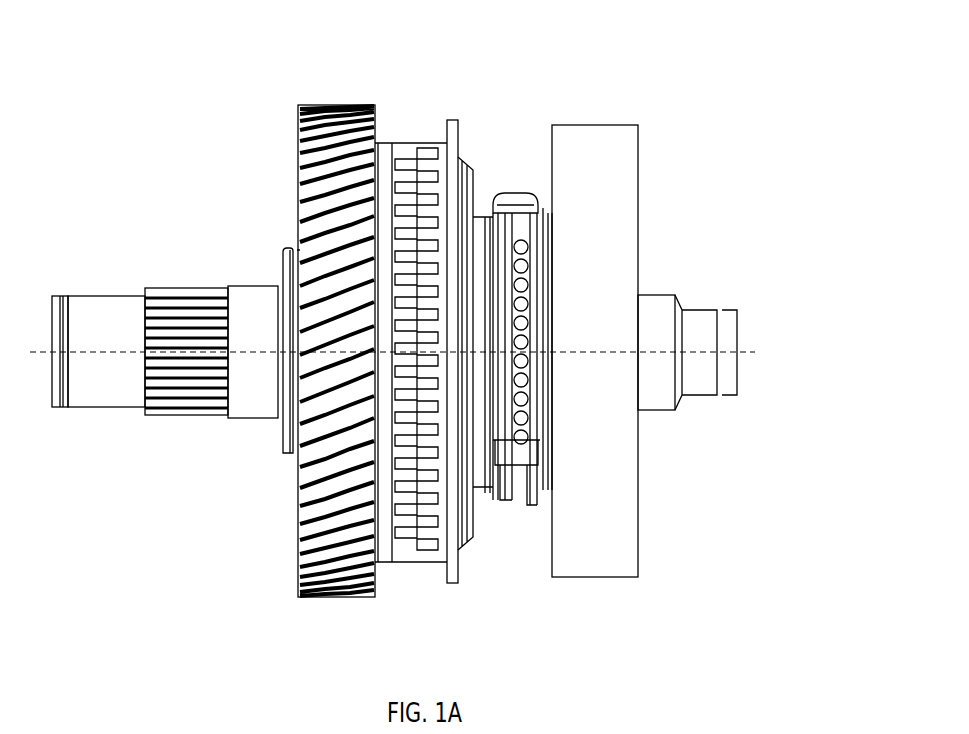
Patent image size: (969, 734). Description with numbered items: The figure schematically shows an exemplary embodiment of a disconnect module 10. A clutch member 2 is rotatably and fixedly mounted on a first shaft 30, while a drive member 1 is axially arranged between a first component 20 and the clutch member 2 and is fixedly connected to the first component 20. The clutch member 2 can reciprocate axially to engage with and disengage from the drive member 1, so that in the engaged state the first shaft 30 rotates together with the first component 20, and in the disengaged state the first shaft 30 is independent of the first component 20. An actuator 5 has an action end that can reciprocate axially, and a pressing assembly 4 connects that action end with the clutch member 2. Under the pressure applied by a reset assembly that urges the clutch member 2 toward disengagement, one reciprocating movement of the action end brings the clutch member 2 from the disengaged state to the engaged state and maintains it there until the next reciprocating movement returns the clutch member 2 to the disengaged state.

The disconnect module 10 is at (556, 299).
The drive member 1 is at (391, 150).
The clutch member 2 is at (446, 150).
The pressing assembly 4 is at (513, 182).
The actuator 5 is at (585, 128).
The first component 20 is at (333, 125).
The first shaft 30 is at (121, 308).